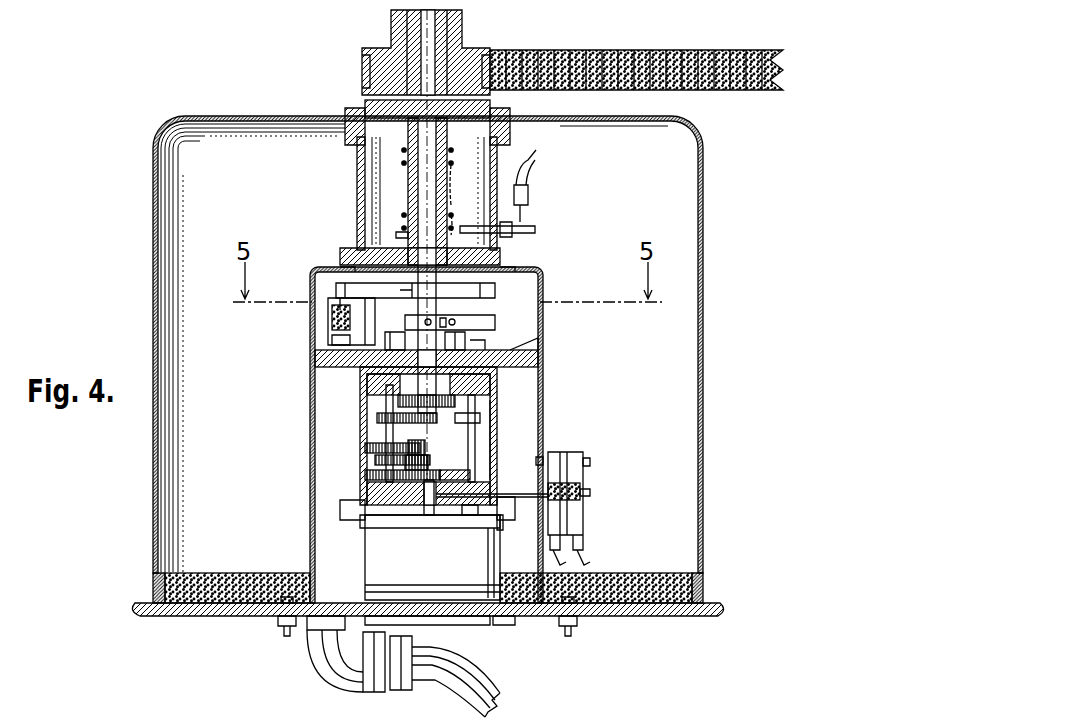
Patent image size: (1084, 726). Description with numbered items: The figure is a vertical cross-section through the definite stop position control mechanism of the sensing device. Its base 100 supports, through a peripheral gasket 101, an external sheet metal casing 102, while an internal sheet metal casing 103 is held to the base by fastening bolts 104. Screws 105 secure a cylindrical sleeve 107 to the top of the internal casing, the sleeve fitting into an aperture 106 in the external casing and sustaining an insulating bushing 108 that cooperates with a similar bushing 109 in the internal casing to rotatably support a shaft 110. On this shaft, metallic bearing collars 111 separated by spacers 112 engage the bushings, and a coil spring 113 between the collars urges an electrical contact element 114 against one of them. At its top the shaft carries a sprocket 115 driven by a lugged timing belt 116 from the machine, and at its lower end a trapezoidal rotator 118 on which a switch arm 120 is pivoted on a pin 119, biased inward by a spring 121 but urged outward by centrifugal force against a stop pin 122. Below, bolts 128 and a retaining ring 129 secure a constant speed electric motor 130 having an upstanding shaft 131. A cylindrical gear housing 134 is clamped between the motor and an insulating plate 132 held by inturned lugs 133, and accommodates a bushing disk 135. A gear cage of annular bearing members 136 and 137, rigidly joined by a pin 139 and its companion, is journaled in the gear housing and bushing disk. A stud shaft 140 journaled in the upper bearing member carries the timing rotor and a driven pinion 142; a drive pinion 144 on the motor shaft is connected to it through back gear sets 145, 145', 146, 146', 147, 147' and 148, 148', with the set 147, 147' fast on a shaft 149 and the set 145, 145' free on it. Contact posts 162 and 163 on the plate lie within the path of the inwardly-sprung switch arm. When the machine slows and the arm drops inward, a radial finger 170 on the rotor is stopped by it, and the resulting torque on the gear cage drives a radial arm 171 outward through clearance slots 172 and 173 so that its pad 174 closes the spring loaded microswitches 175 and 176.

The base 100 is at (718, 612).
The peripheral gasket 101 is at (652, 578).
The external sheet metal casing 102 is at (704, 398).
The internal sheet metal casing 103 is at (498, 392).
The fastening bolts 104 is at (280, 630).
The screws 105 is at (544, 276).
The aperture 106 is at (498, 120).
The cylindrical sleeve 107 is at (500, 162).
The bushing 108 is at (498, 135).
The bushing 109 is at (392, 254).
The shaft 110 is at (425, 195).
The metallic bearing collars 111 is at (403, 236).
The spacers 112 is at (440, 200).
The coil spring 113 is at (453, 160).
The electrical contact element 114 is at (472, 236).
The sprocket 115 is at (392, 50).
The lugged timing belt 116 is at (626, 55).
The rotator 118 is at (485, 292).
The pin 119 is at (334, 340).
The switch arm 120 is at (330, 300).
The spring 121 is at (416, 289).
The stop pin 122 is at (333, 320).
The bolts 128 is at (508, 626).
The retaining ring 129 is at (502, 531).
The constant speed electric motor 130 is at (385, 566).
The shaft 131 is at (424, 518).
The plate 132 is at (545, 362).
The inturned lugs 133 is at (545, 354).
The cylindrical gear housing 134 is at (498, 442).
The bushing disk 135 is at (362, 520).
The annular bearing member 136 is at (492, 386).
The annular bearing member 137 is at (470, 517).
The pin 139 is at (386, 435).
The stud shaft 140 is at (364, 380).
The driven pinion 142 is at (456, 402).
The drive pinion 144 is at (445, 476).
The back gear 145 is at (379, 484).
The back gear 145' is at (374, 467).
The back gear 146 is at (433, 457).
The back gear 146' is at (433, 441).
The back gear 147 is at (369, 454).
The back gear 147' is at (377, 423).
The back gear 148 is at (485, 438).
The back gear 148' is at (495, 421).
The shaft 149 is at (396, 401).
The electrical contact post 162 is at (395, 333).
The electrical contact post 163 is at (478, 336).
The radial finger 170 is at (496, 325).
The radial arm 171 is at (591, 494).
The clearance slot 172 is at (498, 492).
The clearance slot 173 is at (506, 520).
The pad 174 is at (582, 488).
The microswitch 175 is at (555, 466).
The microswitch 176 is at (588, 461).